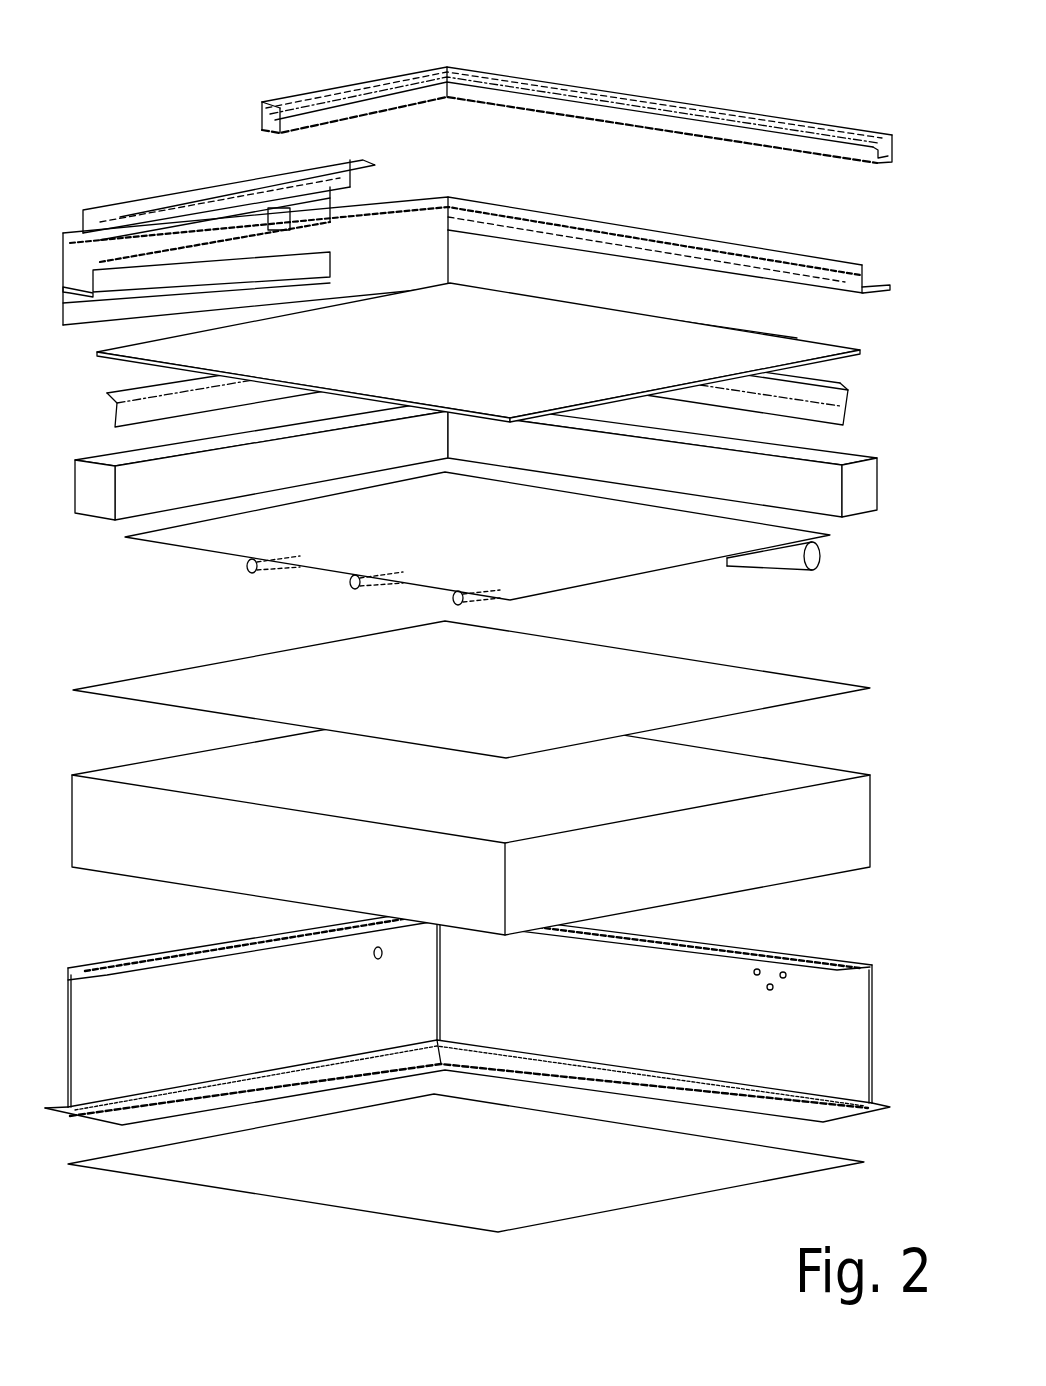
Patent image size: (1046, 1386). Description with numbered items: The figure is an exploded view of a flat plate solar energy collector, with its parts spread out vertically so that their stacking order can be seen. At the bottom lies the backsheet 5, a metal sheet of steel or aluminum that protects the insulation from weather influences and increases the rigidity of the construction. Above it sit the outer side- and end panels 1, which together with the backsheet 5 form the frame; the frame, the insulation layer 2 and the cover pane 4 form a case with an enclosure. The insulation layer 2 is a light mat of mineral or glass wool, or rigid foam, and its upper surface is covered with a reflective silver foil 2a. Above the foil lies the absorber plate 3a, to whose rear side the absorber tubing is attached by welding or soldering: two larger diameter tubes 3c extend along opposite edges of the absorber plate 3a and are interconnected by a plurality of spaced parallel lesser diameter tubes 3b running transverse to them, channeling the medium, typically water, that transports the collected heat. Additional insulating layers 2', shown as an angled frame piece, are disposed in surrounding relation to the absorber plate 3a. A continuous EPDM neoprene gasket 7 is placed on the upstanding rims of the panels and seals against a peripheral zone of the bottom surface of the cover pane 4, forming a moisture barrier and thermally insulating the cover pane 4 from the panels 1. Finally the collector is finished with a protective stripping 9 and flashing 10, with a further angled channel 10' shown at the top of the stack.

The outer side- and end panels 1 is at (808, 1025).
The insulation layer 2 is at (502, 821).
The additional insulating layers 2' is at (507, 460).
The reflective silver foil 2a is at (768, 695).
The absorber plate 3a is at (618, 560).
The lesser diameter tubes 3b is at (453, 599).
The larger diameter tubes 3c is at (818, 560).
The cover pane 4 is at (803, 352).
The backsheet 5 is at (318, 1168).
The gasket 7 is at (835, 405).
The protective stripping 9 is at (820, 268).
The flashing 10 is at (219, 207).
The L-shaped channel 10' is at (577, 86).